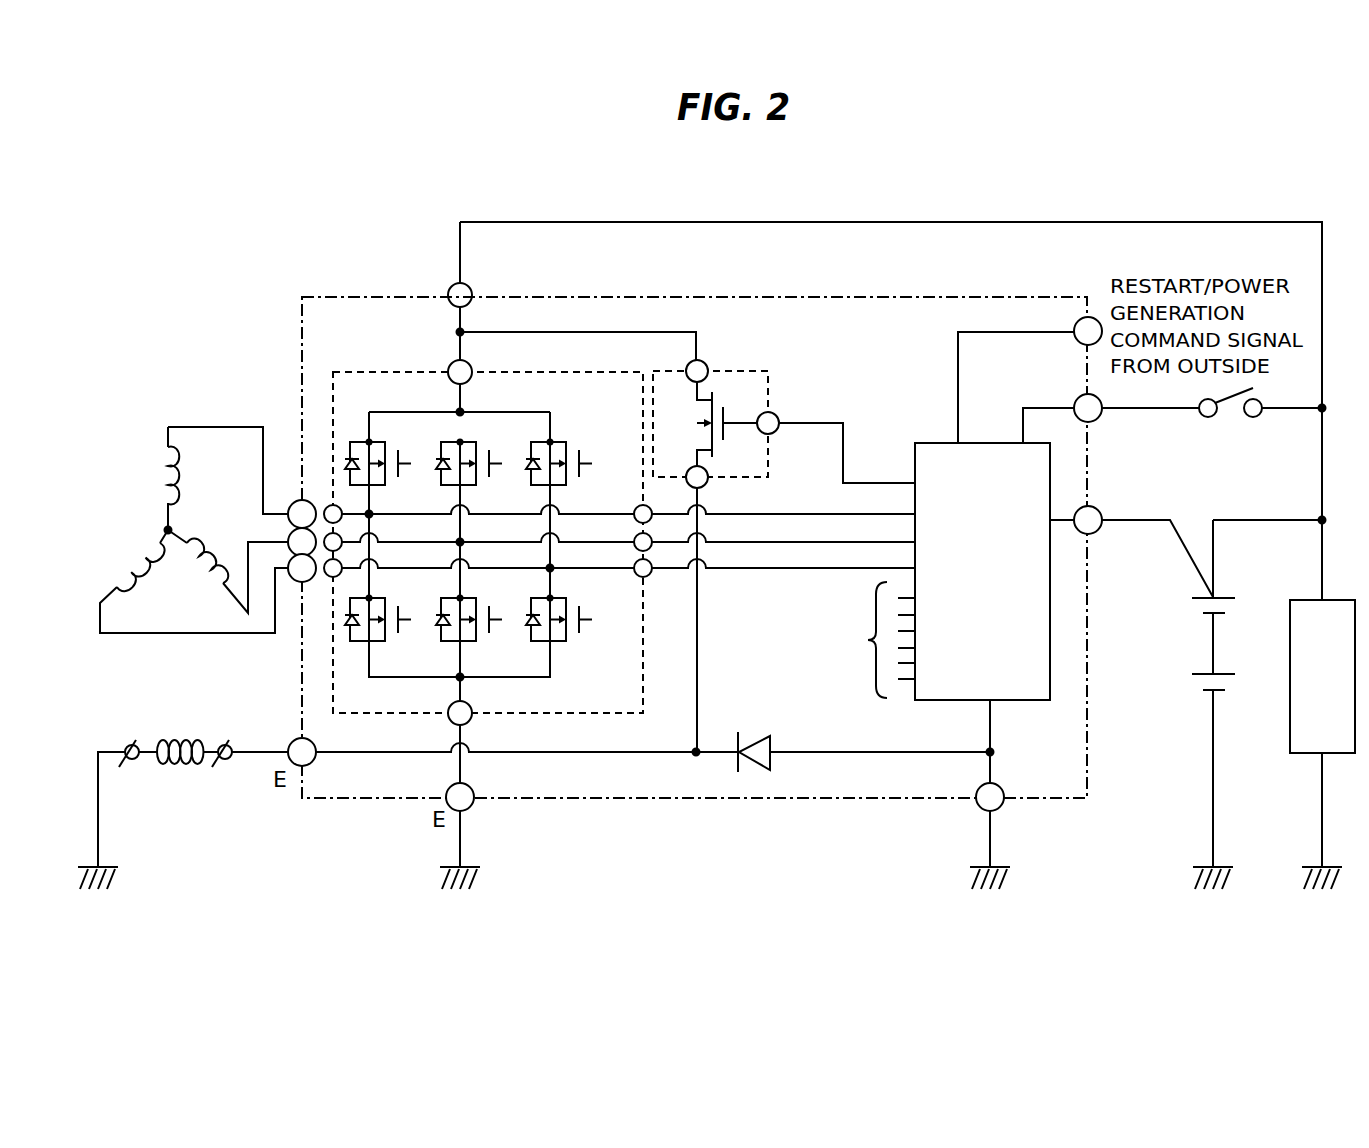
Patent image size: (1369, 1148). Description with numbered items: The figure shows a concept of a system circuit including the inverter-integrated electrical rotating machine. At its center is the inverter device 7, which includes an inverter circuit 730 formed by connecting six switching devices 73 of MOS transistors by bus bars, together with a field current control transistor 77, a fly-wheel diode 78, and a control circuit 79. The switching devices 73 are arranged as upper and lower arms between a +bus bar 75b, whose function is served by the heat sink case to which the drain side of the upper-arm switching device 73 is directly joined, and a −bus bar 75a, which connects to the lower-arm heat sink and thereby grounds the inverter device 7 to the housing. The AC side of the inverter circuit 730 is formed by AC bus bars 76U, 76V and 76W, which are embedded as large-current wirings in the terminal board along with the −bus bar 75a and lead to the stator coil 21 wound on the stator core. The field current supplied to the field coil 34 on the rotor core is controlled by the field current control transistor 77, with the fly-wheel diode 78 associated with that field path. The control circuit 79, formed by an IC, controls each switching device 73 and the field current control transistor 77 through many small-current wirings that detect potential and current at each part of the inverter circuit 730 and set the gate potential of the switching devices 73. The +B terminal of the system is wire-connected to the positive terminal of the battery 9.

The inverter device 7 is at (392, 288).
The inverter circuit 730 is at (378, 368).
The switching device 73 is at (592, 435).
The −bus bar 75a is at (462, 693).
The +bus bar 75b is at (462, 352).
The AC bus bar 76U is at (357, 514).
The AC bus bar 76V is at (413, 542).
The AC bus bar 76W is at (423, 572).
The field current control transistor 77 is at (779, 385).
The fly-wheel diode 78 is at (752, 730).
The control circuit 79 is at (987, 443).
The battery 9 is at (1210, 645).
The stator coil 21 is at (150, 519).
The field coil 34 is at (178, 740).